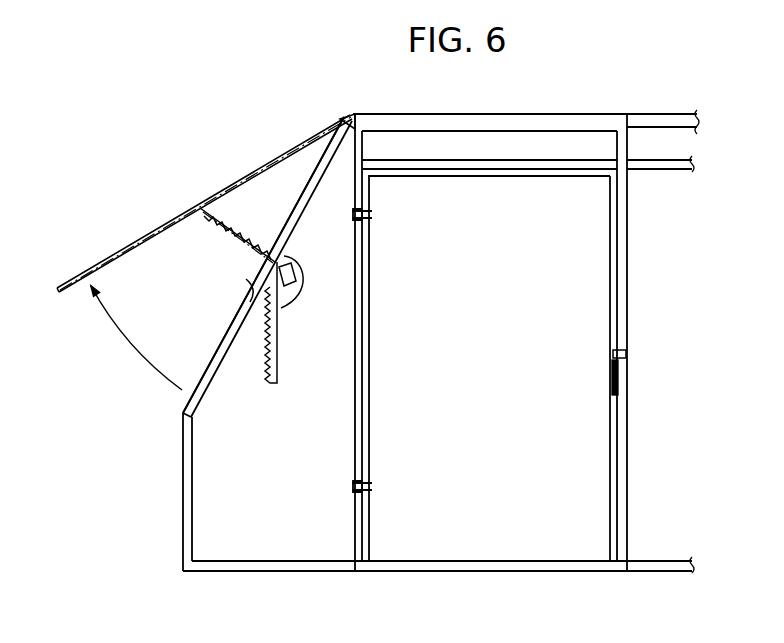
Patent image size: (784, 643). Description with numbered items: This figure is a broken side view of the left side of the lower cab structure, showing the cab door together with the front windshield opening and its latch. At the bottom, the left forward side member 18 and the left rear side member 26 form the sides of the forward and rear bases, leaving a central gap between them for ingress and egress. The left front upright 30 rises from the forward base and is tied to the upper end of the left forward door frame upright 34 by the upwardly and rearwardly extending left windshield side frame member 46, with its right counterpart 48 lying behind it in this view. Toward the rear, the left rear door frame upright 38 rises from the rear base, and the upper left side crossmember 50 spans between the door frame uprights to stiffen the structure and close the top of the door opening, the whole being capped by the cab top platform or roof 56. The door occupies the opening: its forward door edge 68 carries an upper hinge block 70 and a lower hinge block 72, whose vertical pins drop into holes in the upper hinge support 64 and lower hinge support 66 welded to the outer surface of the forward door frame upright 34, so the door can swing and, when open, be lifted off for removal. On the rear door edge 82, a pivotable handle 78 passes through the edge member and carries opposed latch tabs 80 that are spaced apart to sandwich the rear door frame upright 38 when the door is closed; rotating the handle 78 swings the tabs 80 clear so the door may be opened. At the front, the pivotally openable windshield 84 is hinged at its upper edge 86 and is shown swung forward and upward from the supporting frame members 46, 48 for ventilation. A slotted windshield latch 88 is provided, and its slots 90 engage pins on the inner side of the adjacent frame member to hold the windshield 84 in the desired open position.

The left forward side member 18 is at (282, 572).
The left rear side member 26 is at (668, 573).
The left front upright 30 is at (182, 486).
The left forward door frame upright 34 is at (354, 390).
The left rear door frame upright 38 is at (629, 270).
The left windshield side frame member 46 is at (237, 322).
The right windshield side frame member 48 is at (263, 265).
The upper left side crossmember 50 is at (640, 170).
The cab top platform or roof 56 is at (672, 114).
The upper hinge support 64 is at (355, 214).
The lower hinge support 66 is at (354, 490).
The forward door edge 68 is at (372, 330).
The upper hinge block 70 is at (372, 213).
The lower hinge block 72 is at (372, 485).
The pivotable handle 78 is at (611, 380).
The latch tabs 80 is at (627, 354).
The rear door edge 82 is at (610, 273).
The windshield 84 is at (178, 212).
The upper edge 86 is at (343, 118).
The slotted windshield latch 88 is at (288, 263).
The slots 90 is at (263, 262).